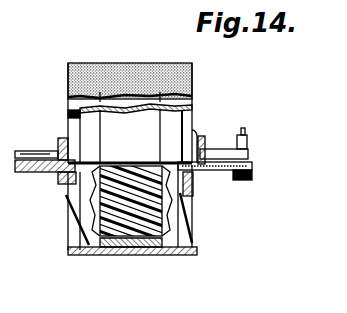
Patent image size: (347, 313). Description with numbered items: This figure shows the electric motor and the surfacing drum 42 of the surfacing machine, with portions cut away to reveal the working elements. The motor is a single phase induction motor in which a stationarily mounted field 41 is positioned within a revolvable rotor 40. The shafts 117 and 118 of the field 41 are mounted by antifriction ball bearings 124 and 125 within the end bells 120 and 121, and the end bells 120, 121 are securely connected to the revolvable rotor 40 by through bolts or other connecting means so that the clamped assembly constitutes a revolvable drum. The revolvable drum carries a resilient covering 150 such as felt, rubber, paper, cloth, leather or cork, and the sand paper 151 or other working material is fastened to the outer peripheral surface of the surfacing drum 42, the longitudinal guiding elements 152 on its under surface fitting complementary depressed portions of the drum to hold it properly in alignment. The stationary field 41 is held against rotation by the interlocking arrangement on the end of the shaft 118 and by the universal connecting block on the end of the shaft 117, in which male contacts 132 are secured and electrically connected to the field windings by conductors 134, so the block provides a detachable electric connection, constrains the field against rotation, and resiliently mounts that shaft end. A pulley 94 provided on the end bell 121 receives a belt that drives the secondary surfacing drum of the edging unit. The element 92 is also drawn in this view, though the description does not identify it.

The revolvable rotor 40 is at (132, 133).
The stationarily mounted field 41 is at (120, 252).
The surfacing drum 42 is at (108, 59).
The bearing block 92 is at (63, 140).
The pulley 94 is at (204, 136).
The shaft 117 is at (215, 150).
The shaft 118 is at (48, 172).
The end bell 120 is at (88, 125).
The end bell 121 is at (196, 120).
The antifriction ball bearing 124 is at (63, 188).
The antifriction ball bearing 125 is at (193, 182).
The male contact 132 is at (248, 132).
The conductor 134 is at (218, 170).
The resilient covering 150 is at (193, 95).
The sand paper 151 is at (173, 52).
The longitudinal guiding element 152 is at (73, 255).